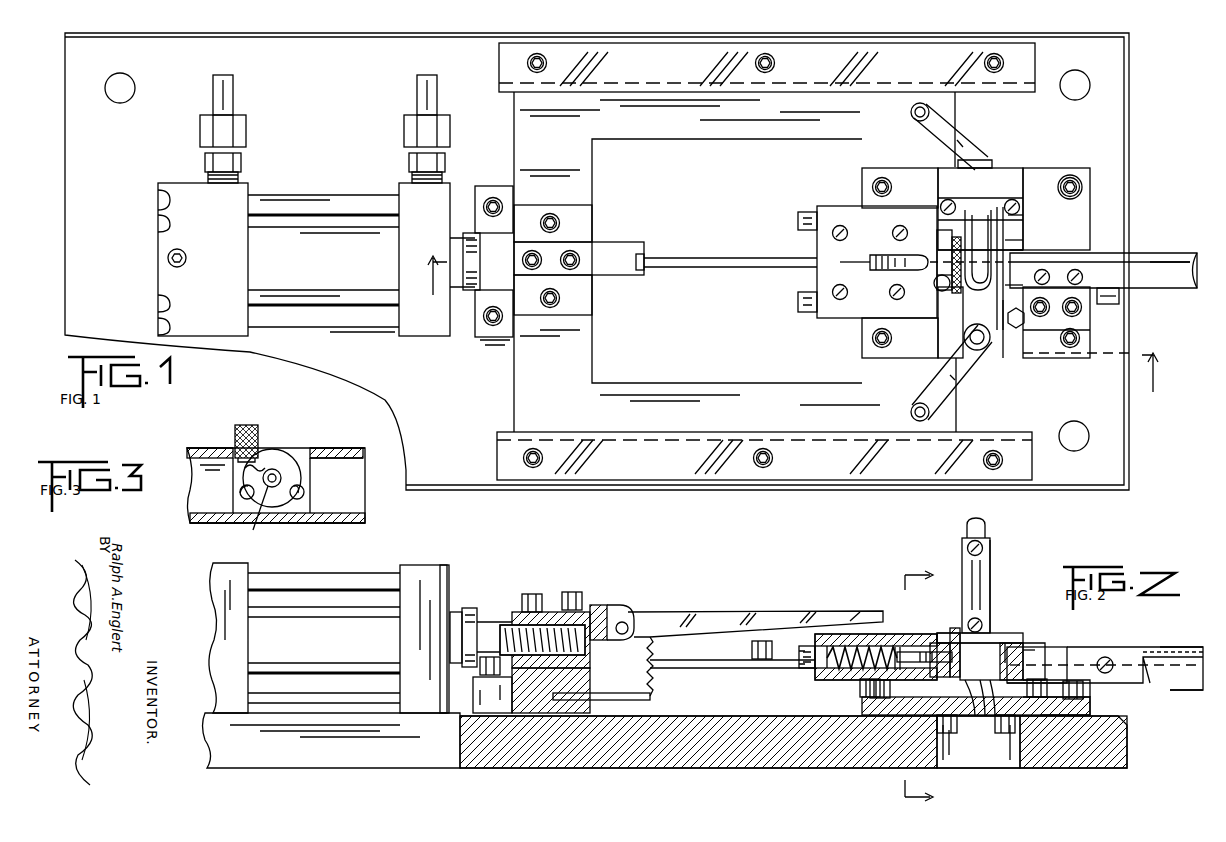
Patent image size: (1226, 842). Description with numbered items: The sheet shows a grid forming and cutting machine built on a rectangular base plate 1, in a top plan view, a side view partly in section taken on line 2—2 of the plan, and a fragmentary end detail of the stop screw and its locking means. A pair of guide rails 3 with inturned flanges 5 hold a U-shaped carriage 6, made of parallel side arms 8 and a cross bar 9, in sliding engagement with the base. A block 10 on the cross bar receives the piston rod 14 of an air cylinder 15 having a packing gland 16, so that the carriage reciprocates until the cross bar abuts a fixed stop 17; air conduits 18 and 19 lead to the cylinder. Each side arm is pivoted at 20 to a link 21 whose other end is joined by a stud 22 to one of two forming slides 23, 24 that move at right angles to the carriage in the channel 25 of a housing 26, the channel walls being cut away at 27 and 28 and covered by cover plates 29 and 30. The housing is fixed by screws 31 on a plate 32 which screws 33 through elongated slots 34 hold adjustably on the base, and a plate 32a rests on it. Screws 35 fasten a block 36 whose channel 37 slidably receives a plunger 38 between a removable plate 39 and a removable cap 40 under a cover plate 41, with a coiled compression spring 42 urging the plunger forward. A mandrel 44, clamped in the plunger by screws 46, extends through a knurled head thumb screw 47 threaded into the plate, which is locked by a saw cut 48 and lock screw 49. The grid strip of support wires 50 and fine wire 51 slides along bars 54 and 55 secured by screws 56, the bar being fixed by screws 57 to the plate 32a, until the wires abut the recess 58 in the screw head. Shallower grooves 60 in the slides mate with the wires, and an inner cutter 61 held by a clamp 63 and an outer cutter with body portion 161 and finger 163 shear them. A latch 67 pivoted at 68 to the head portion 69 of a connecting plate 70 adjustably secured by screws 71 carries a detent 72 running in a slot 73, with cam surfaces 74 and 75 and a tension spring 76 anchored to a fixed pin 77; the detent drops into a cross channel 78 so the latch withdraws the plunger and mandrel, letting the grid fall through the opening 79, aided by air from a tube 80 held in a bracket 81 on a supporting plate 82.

In FIG. 1, the base plate 1 is at (404, 37).
In FIG. 2, the base plate 1 is at (512, 768).
In FIG. 1, the section line 2 is at (793, 324).
In FIG. 1, the guide rails 3 is at (690, 46).
In FIG. 1, the inturned flanges 5 is at (797, 80).
In FIG. 2, the inturned flanges 5 is at (750, 668).
In FIG. 1, the U-shaped carriage 6 is at (595, 145).
In FIG. 1, the side arms 8 is at (735, 140).
In FIG. 2, the side arms 8 is at (720, 718).
In FIG. 1, the cross bar 9 is at (588, 342).
In FIG. 2, the cross bar 9 is at (592, 682).
In FIG. 1, the block 10 is at (585, 232).
In FIG. 2, the block 10 is at (515, 612).
In FIG. 1, the piston rod 14 is at (470, 300).
In FIG. 2, the piston rod 14 is at (478, 625).
In FIG. 1, the air cylinder 15 is at (375, 300).
In FIG. 2, the air cylinder 15 is at (245, 617).
In FIG. 1, the packing gland 16 is at (478, 205).
In FIG. 2, the packing gland 16 is at (447, 600).
In FIG. 1, the fixed stop 17 is at (496, 342).
In FIG. 2, the fixed stop 17 is at (447, 718).
In FIG. 1, the air conduit 18 is at (236, 104).
In FIG. 1, the air conduit 19 is at (415, 92).
In FIG. 1, the pivot 20 is at (930, 112).
In FIG. 1, the link 21 is at (942, 143).
In FIG. 1, the stud 22 is at (977, 350).
In FIG. 1, the forming slide 23 is at (1003, 332).
In FIG. 1, the forming slide 24 is at (1000, 170).
In FIG. 2, the forming slide 24 is at (978, 720).
In FIG. 1, the channel 25 is at (938, 278).
In FIG. 3, the channel 25 is at (365, 498).
In FIG. 1, the housing 26 is at (1000, 243).
In FIG. 3, the housing 26 is at (366, 520).
In FIG. 2, the housing 26 is at (1035, 715).
In FIG. 1, the cut-away 27 is at (950, 300).
In FIG. 3, the cut-away 27 is at (318, 455).
In FIG. 1, the cut-away 28 is at (1022, 325).
In FIG. 2, the cut-away 28 is at (1025, 660).
In FIG. 1, the cover plate 29 is at (952, 345).
In FIG. 3, the cover plate 29 is at (203, 447).
In FIG. 1, the cover plate 30 is at (998, 192).
In FIG. 3, the cover plate 30 is at (358, 450).
In FIG. 2, the cover plate 30 is at (1012, 636).
In FIG. 2, the screws 31 is at (976, 742).
In FIG. 1, the plate 32 is at (1092, 220).
In FIG. 2, the plate 32 is at (1092, 705).
In FIG. 1, the plate 32a is at (1092, 320).
In FIG. 2, the plate 32a is at (1052, 716).
In FIG. 1, the screws 33 is at (1085, 190).
In FIG. 2, the screws 33 is at (862, 690).
In FIG. 1, the elongated slots 34 is at (1074, 184).
In FIG. 1, the screws 35 is at (805, 212).
In FIG. 2, the screws 35 is at (805, 670).
In FIG. 2, the block 36 is at (830, 681).
In FIG. 2, the channel 37 is at (823, 640).
In FIG. 1, the plunger 38 is at (915, 254).
In FIG. 2, the plunger 38 is at (953, 630).
In FIG. 1, the removable plate 39 is at (945, 232).
In FIG. 3, the removable plate 39 is at (300, 503).
In FIG. 2, the removable plate 39 is at (950, 630).
In FIG. 2, the removable cap 40 is at (807, 647).
In FIG. 1, the cover plate 41 is at (817, 288).
In FIG. 2, the cover plate 41 is at (830, 645).
In FIG. 1, the coiled compression spring 42 is at (885, 283).
In FIG. 2, the coiled compression spring 42 is at (905, 653).
In FIG. 1, the mandrel 44 is at (986, 284).
In FIG. 2, the mandrel 44 is at (998, 640).
In FIG. 2, the screws 46 is at (935, 676).
In FIG. 1, the knurled head thumb screw 47 is at (957, 237).
In FIG. 3, the knurled head thumb screw 47 is at (285, 452).
In FIG. 2, the knurled head thumb screw 47 is at (957, 716).
In FIG. 3, the saw cut 48 is at (232, 465).
In FIG. 1, the lock screw 49 is at (938, 288).
In FIG. 3, the lock screw 49 is at (247, 424).
In FIG. 2, the support wires 50 is at (1196, 648).
In FIG. 2, the fine wire 51 is at (1196, 691).
In FIG. 1, the bar 54 is at (1165, 272).
In FIG. 2, the bar 54 is at (1175, 684).
In FIG. 1, the bar 55 is at (1194, 276).
In FIG. 2, the bar 55 is at (1160, 652).
In FIG. 1, the screws 56 is at (1120, 300).
In FIG. 2, the screws 56 is at (1110, 658).
In FIG. 1, the screws 57 is at (1120, 296).
In FIG. 3, the recess 58 is at (255, 517).
In FIG. 2, the recess 58 is at (985, 720).
In FIG. 2, the shallower grooves 60 is at (977, 614).
In FIG. 2, the inner cutter 61 is at (995, 720).
In FIG. 2, the clamp 63 is at (1035, 652).
In FIG. 1, the latch 67 is at (706, 258).
In FIG. 2, the latch 67 is at (706, 614).
In FIG. 2, the pivot 68 is at (627, 621).
In FIG. 1, the bifurcated overhanging head portion 69 is at (612, 283).
In FIG. 2, the bifurcated overhanging head portion 69 is at (603, 604).
In FIG. 1, the connecting plate 70 is at (578, 280).
In FIG. 2, the connecting plate 70 is at (540, 594).
In FIG. 1, the screws 71 is at (578, 255).
In FIG. 2, the screws 71 is at (577, 592).
In FIG. 2, the detent 72 is at (892, 650).
In FIG. 1, the slot 73 is at (878, 257).
In FIG. 2, the slot 73 is at (925, 650).
In FIG. 2, the bevelled edge portion 74 is at (899, 660).
In FIG. 2, the bevelled edge portion 75 is at (846, 648).
In FIG. 2, the coiled tension spring 76 is at (656, 685).
In FIG. 2, the fixed pin 77 is at (632, 700).
In FIG. 1, the cross channel 78 is at (893, 252).
In FIG. 2, the cross channel 78 is at (938, 655).
In FIG. 2, the opening 79 is at (1008, 734).
In FIG. 1, the tube 80 is at (990, 207).
In FIG. 2, the tube 80 is at (985, 527).
In FIG. 1, the bracket 81 is at (1015, 214).
In FIG. 2, the bracket 81 is at (962, 540).
In FIG. 1, the supporting plate 82 is at (968, 235).
In FIG. 2, the supporting plate 82 is at (992, 600).
In FIG. 1, the body portion 161 is at (1010, 280).
In FIG. 1, the pilot or finger 163 is at (1022, 253).
In FIG. 2, the pilot or finger 163 is at (1030, 650).